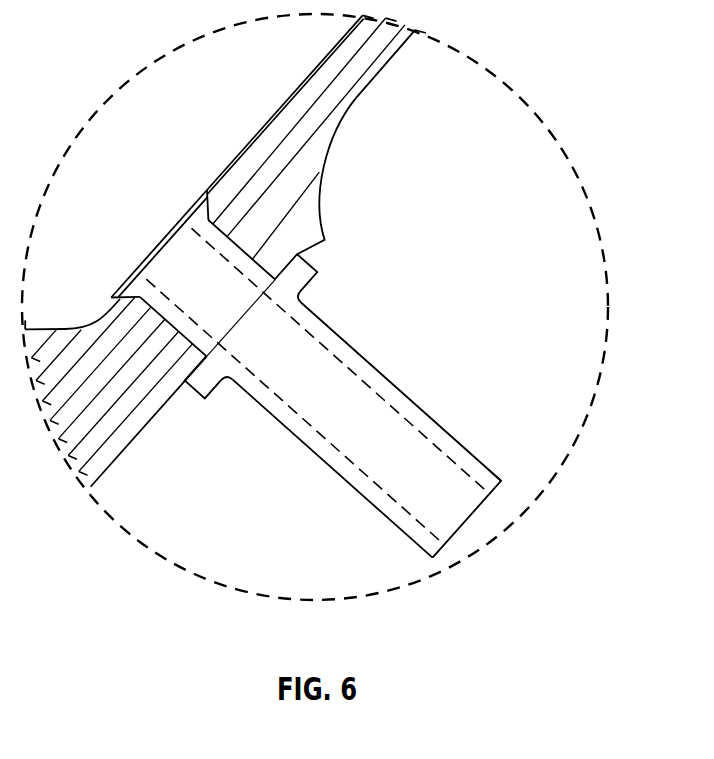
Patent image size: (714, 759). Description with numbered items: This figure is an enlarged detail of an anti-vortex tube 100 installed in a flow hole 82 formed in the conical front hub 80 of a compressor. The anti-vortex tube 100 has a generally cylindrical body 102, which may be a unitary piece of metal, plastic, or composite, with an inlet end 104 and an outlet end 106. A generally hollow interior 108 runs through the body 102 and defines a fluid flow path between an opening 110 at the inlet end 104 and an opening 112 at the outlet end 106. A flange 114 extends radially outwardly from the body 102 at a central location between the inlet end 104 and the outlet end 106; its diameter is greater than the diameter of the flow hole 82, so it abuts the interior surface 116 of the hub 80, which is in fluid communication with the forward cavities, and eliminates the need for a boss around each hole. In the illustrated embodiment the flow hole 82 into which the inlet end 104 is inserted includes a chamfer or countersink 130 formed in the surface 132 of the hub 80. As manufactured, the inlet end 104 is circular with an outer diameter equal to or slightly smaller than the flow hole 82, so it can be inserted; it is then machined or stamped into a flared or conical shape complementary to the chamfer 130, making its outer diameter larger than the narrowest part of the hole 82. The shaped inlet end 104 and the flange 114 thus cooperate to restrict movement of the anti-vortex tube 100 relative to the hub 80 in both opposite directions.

The front hub 80 is at (367, 77).
The flow hole 82 is at (256, 257).
The anti-vortex tube 100 is at (307, 497).
The body 102 is at (387, 372).
The inlet end 104 is at (207, 189).
The outlet end 106 is at (487, 470).
The hollow interior 108 is at (305, 393).
The opening at the inlet end 110 is at (173, 225).
The opening at the outlet end 112 is at (457, 517).
The flange 114 is at (210, 390).
The interior surface 116 is at (112, 471).
The chamfer 130 is at (125, 293).
The surface of the hub 132 is at (328, 62).